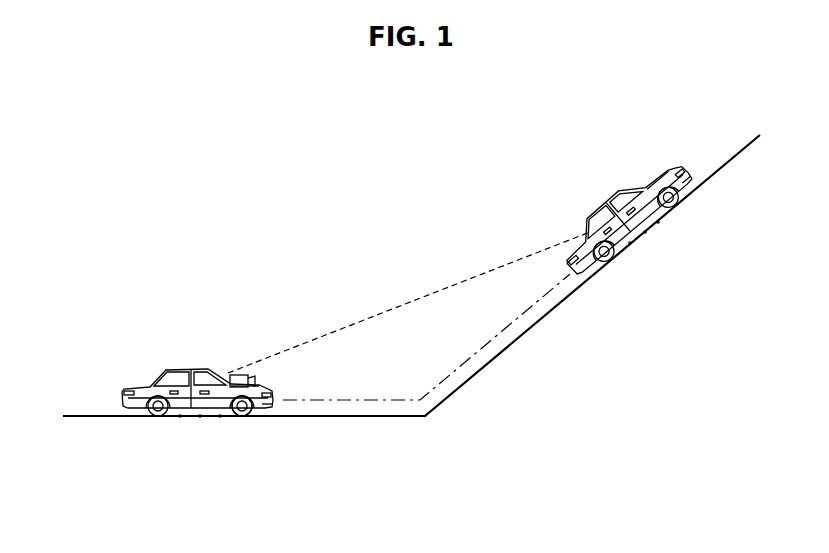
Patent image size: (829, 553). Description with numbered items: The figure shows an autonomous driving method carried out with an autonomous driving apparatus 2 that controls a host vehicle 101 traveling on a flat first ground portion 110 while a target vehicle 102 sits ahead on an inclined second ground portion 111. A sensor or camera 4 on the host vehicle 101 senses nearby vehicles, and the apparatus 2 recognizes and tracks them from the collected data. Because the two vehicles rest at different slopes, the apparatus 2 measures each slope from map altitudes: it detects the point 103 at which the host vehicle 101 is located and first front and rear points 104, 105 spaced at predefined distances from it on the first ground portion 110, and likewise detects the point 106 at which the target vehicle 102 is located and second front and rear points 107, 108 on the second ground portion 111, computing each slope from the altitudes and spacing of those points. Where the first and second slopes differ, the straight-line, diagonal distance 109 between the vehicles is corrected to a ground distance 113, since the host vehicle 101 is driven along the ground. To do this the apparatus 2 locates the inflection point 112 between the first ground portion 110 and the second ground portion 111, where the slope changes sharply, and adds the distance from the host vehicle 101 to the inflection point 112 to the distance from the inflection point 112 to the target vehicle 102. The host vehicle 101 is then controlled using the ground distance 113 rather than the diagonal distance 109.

The autonomous driving apparatus 2 is at (236, 416).
The sensor or camera 4 is at (249, 380).
The host vehicle 101 is at (188, 367).
The target vehicle 102 is at (610, 205).
The point at which the host vehicle is located 103 is at (200, 417).
The first front point 104 is at (220, 417).
The first rear point 105 is at (180, 417).
The point at which the target vehicle is located 106 is at (645, 232).
The second front point 107 is at (658, 222).
The second rear point 108 is at (630, 243).
The straight-line diagonal distance 109 is at (401, 305).
The first ground portion 110 is at (74, 414).
The second ground portion 111 is at (730, 158).
The inflection point 112 is at (427, 418).
The ground distance 113 is at (362, 398).